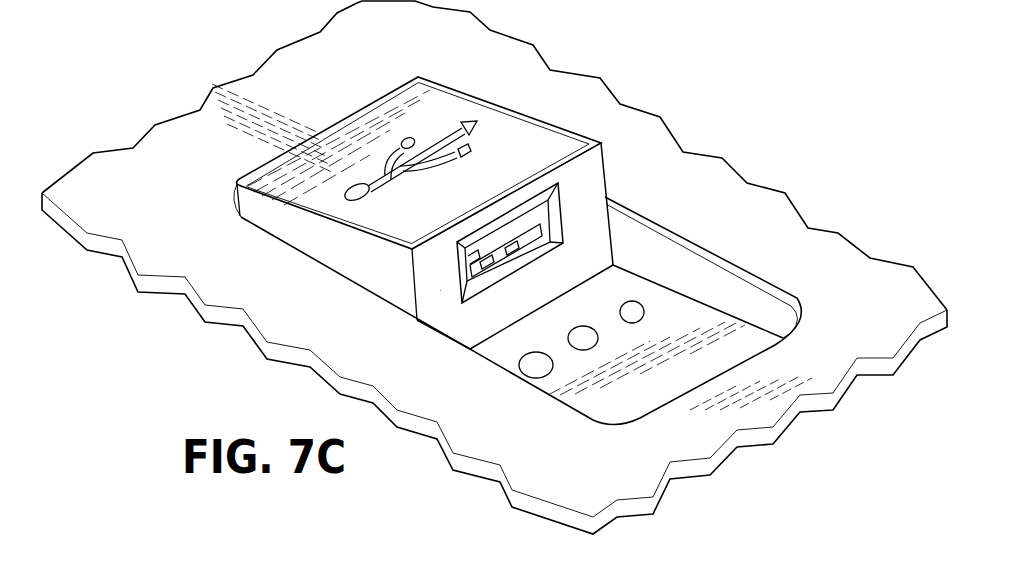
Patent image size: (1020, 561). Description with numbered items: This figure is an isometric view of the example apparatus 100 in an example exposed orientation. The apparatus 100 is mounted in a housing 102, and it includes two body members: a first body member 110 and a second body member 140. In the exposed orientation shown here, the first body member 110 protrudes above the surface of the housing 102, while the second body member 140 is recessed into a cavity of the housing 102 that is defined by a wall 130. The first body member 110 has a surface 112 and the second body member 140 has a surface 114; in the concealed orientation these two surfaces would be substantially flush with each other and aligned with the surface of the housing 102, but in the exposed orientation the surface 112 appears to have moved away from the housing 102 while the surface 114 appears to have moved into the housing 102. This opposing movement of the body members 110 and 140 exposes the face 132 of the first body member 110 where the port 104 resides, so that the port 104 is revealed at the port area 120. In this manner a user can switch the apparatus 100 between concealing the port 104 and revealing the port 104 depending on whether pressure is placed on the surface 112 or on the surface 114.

The apparatus 100 is at (660, 86).
The housing 102 is at (607, 471).
The port 104 is at (493, 227).
The first body member 110 is at (545, 105).
The surface 112 is at (492, 125).
The surface 114 is at (690, 303).
The port area 120 is at (590, 212).
The wall 130 is at (670, 257).
The face 132 is at (445, 305).
The second body member 140 is at (745, 300).